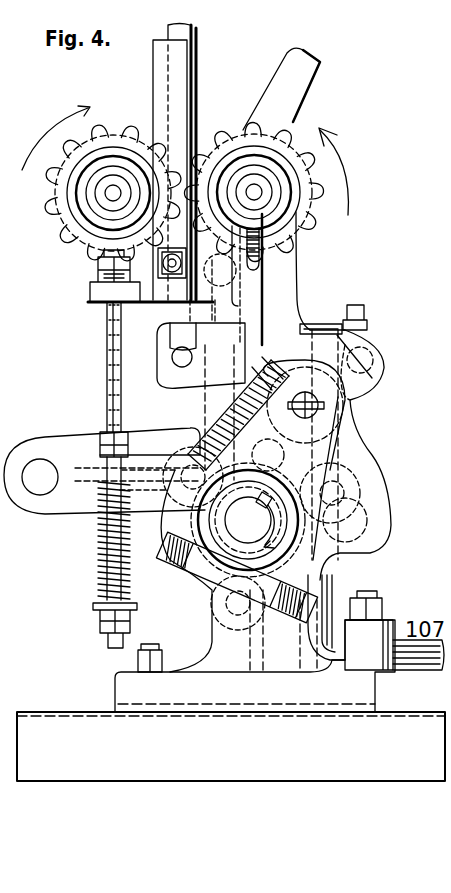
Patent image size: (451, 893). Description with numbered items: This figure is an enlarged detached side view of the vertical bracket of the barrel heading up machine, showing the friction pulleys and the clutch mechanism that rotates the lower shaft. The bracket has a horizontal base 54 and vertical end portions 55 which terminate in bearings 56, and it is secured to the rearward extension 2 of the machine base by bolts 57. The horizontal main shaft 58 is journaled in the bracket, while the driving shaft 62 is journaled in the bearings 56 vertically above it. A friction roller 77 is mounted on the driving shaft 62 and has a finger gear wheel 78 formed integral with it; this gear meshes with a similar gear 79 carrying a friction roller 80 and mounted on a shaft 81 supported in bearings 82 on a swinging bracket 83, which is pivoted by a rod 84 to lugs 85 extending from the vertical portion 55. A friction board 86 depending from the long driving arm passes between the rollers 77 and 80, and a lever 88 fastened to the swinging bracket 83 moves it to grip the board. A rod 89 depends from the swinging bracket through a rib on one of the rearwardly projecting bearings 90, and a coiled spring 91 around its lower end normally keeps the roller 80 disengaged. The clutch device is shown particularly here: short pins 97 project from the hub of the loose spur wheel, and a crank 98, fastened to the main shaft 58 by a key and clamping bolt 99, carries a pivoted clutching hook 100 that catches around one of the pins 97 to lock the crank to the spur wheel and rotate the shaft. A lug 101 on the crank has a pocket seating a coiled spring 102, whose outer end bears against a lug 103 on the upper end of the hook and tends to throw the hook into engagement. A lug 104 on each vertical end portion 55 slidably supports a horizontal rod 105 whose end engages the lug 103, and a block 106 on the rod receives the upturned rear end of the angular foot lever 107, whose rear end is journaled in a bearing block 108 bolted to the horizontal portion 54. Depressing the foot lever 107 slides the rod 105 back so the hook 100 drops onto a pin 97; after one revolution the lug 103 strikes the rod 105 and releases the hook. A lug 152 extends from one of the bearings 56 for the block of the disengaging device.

The rearward extension 2 is at (231, 746).
The horizontal base 54 is at (255, 666).
The vertical end portions 55 is at (276, 442).
The bearings 56 is at (286, 201).
The bolts 57 is at (384, 614).
The main shaft 58 is at (248, 520).
The driving shaft 62 is at (254, 192).
The friction roller 77 is at (238, 148).
The finger gear wheel 78 is at (293, 226).
The gear 79 is at (52, 205).
The friction roller 80 is at (77, 222).
The shaft 81 is at (113, 193).
The bearings 82 is at (113, 165).
The swinging bracket 83 is at (92, 290).
The rod 84 is at (205, 290).
The lugs 85 is at (258, 266).
The friction board 86 is at (197, 71).
The lever 88 is at (158, 69).
The rod 89 is at (99, 367).
The rearwardly projecting bearings 90 is at (104, 471).
The coiled spring 91 is at (106, 552).
The pins 97 is at (190, 488).
The crank 98 is at (277, 456).
The clamping bolt 99 is at (313, 608).
The clutching hook 100 is at (350, 521).
The lug 101 is at (218, 412).
The coiled spring 102 is at (263, 364).
The lug 103 is at (304, 404).
The lug 104 is at (366, 384).
The rod 105 is at (365, 352).
The block 106 is at (302, 326).
The foot lever 107 is at (338, 320).
The bearing block 108 is at (369, 645).
The lug 152 is at (281, 89).